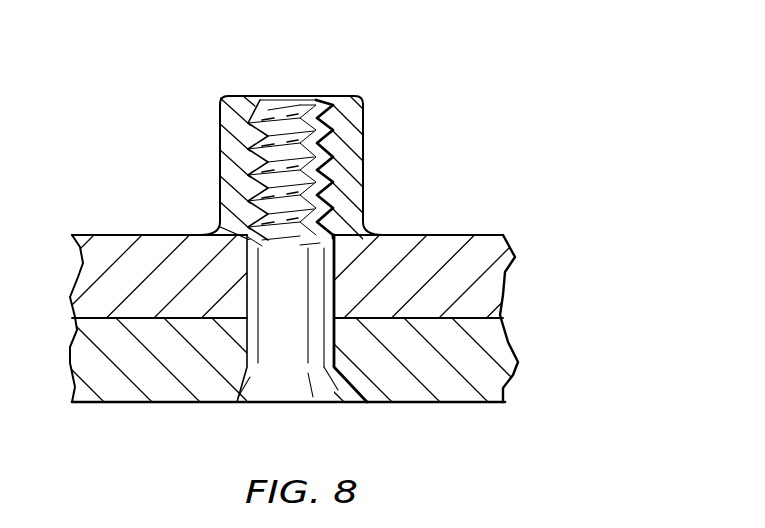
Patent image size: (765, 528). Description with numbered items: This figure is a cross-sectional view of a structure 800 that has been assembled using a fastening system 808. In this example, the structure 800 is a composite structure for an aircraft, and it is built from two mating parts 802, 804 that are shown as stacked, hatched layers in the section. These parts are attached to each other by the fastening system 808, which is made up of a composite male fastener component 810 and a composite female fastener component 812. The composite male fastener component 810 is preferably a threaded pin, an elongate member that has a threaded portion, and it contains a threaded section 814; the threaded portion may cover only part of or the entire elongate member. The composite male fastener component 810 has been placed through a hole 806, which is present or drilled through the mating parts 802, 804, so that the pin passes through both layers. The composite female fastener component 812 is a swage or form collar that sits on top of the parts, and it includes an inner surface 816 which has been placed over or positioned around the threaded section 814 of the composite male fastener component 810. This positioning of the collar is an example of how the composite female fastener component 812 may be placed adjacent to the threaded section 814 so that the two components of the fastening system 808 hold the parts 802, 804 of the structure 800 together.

The structure 800 is at (538, 320).
The part 802 is at (516, 258).
The part 804 is at (509, 366).
The hole 806 is at (247, 260).
The fastening system 808 is at (318, 137).
The composite male fastener component 810 is at (330, 403).
The composite female fastener component 812 is at (220, 142).
The threaded section 814 is at (288, 96).
The inner surface 816 is at (340, 143).